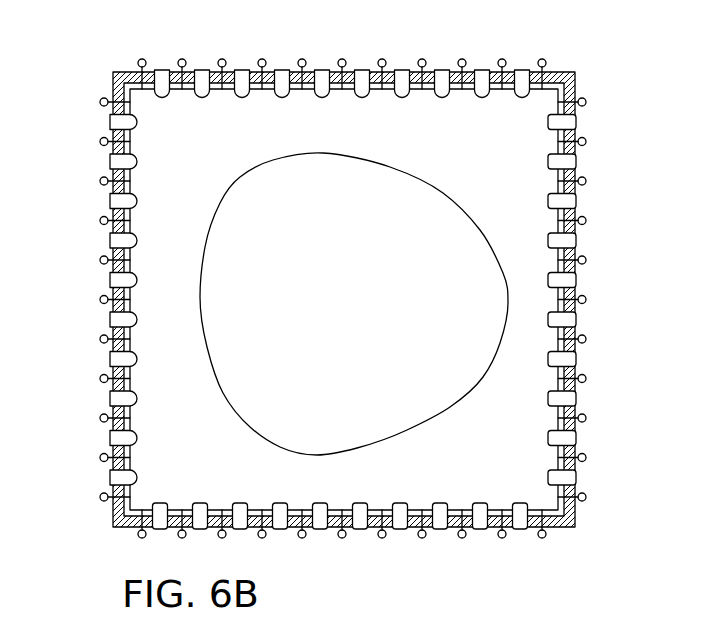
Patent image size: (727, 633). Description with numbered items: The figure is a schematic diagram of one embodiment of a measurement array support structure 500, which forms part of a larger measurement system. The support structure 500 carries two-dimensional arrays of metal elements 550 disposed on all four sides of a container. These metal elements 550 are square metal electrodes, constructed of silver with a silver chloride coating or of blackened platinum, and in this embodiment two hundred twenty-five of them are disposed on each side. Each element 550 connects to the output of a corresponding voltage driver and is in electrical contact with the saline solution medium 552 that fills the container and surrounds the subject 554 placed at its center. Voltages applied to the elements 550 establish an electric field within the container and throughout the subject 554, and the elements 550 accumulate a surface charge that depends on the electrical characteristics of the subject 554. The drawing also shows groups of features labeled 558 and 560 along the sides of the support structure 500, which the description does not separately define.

The measurement array support structure 500 is at (60, 408).
The metal elements 550 is at (130, 142).
The saline solution medium 552 is at (425, 134).
The subject 554 is at (351, 314).
The first bond pads 558 is at (442, 70).
The second bond pads 560 is at (576, 478).